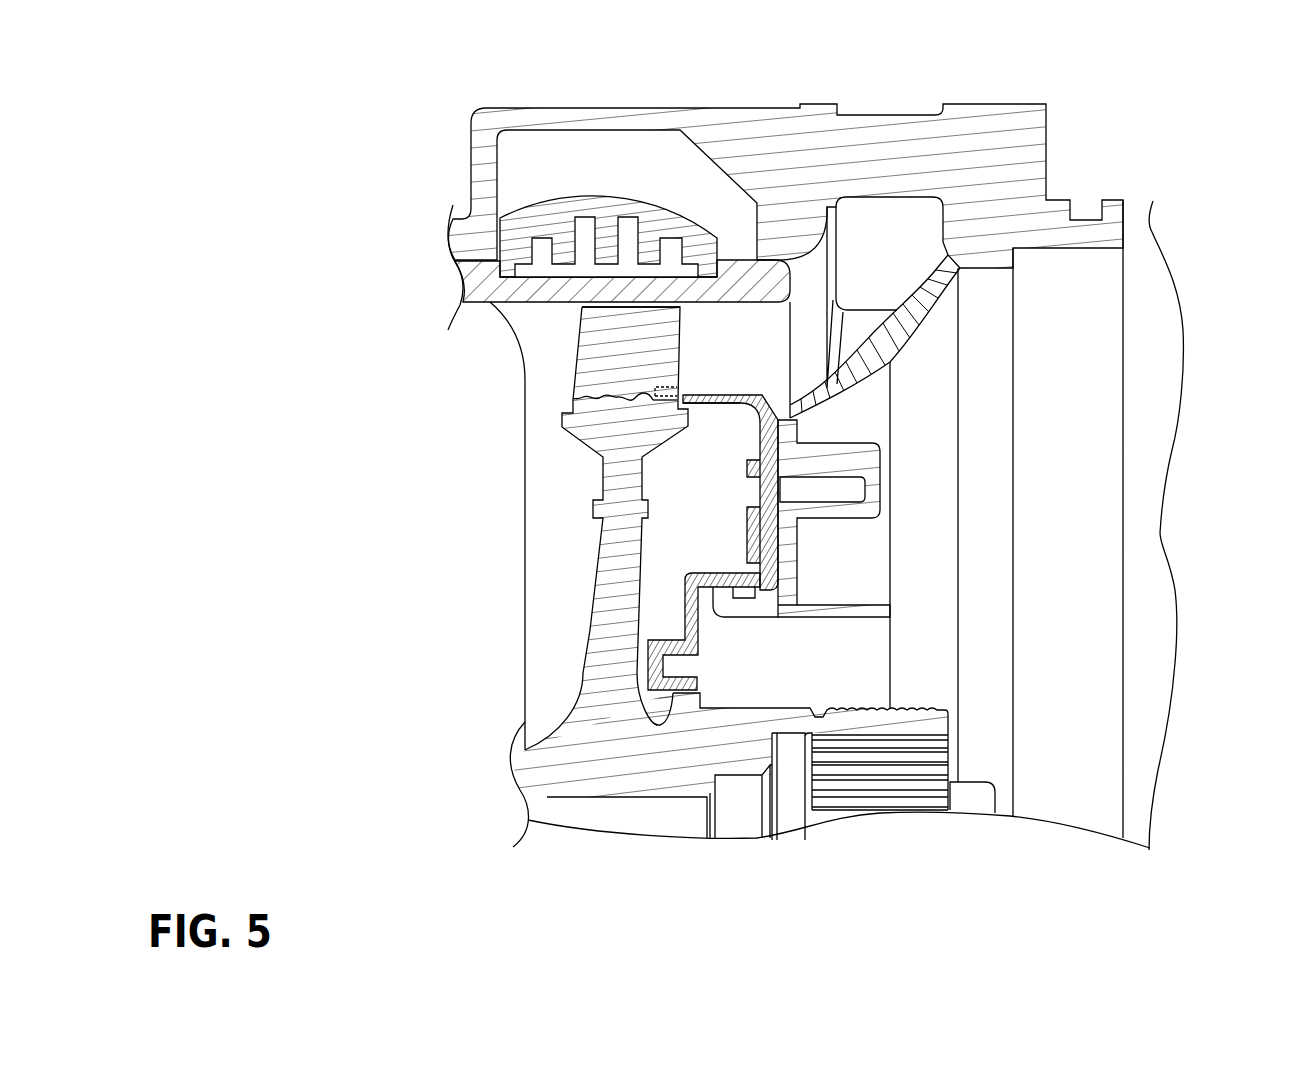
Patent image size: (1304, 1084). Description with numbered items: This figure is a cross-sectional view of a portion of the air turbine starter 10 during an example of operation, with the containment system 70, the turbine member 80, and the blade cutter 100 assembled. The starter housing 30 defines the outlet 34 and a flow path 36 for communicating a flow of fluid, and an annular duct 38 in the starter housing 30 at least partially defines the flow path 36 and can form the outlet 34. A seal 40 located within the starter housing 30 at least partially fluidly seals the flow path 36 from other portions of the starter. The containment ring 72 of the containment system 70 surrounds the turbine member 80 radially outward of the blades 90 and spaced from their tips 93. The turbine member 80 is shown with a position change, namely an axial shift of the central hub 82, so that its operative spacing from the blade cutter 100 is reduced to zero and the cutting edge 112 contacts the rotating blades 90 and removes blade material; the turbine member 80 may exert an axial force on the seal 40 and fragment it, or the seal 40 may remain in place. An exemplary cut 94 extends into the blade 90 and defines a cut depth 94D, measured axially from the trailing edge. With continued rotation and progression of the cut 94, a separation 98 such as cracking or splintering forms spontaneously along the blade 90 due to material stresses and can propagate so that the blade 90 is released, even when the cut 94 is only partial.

The air turbine starter 10 is at (1291, 51).
The starter housing 30 is at (765, 397).
The outlet 34 is at (916, 113).
The flow path 36 is at (914, 239).
The annular duct 38 is at (878, 352).
The seal 40 is at (709, 565).
The containment system 70 is at (590, 232).
The containment ring 72 is at (516, 207).
The turbine member 80 is at (815, 577).
The central hub 82 is at (590, 636).
The blade 90 is at (627, 394).
The tip 93 is at (679, 308).
The cut 94 is at (658, 408).
The cut depth 94D is at (676, 385).
The separation 98 is at (594, 400).
The blade cutter 100 is at (786, 478).
The cutting edge 112 is at (697, 405).